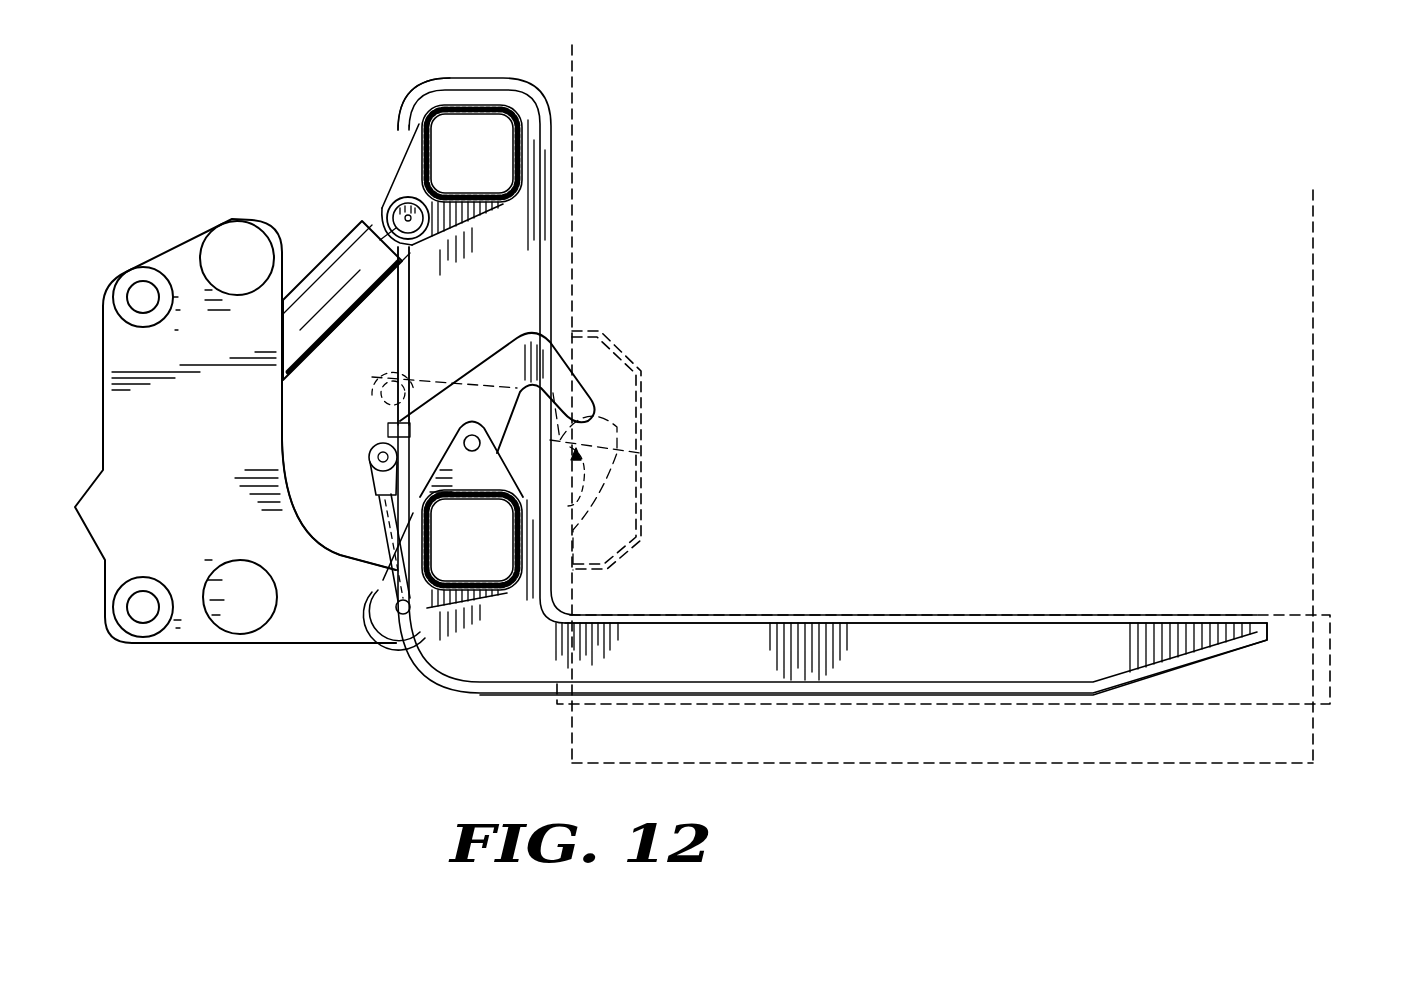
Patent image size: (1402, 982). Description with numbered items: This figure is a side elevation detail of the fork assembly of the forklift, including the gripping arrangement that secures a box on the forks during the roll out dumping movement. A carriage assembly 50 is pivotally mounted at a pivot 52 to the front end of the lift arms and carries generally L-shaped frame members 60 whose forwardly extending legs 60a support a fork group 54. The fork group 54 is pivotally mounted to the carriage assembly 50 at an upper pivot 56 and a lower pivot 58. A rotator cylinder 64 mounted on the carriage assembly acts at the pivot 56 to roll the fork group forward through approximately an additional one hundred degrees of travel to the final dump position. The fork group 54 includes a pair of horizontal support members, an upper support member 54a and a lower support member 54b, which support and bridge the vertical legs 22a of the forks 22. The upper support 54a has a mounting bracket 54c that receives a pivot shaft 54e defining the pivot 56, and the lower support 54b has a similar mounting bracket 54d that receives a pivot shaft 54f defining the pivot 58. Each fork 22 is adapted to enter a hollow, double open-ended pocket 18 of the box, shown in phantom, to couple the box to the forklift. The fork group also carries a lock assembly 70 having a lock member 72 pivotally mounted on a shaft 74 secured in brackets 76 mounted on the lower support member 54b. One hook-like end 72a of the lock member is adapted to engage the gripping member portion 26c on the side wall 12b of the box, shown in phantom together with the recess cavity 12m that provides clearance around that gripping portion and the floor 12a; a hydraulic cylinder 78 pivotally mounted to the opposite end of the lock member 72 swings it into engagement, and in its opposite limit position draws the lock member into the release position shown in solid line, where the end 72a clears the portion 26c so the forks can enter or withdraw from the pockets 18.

The floor 12a is at (940, 768).
The side wall 12b is at (574, 192).
The recess cavity 12m is at (618, 333).
The pocket 18 is at (1333, 665).
The fork 22 is at (793, 622).
The vertical leg 22a is at (402, 122).
The gripping member portion 26c is at (578, 508).
The carriage assembly 50 is at (214, 672).
The pivot 52 is at (142, 606).
The fork group 54 is at (437, 705).
The upper support member 54a is at (496, 108).
The lower support member 54b is at (500, 604).
The mounting bracket 54c is at (403, 172).
The mounting bracket 54d is at (436, 608).
The pivot shaft 54e is at (386, 210).
The pivot shaft 54f is at (400, 642).
The pivot 56 is at (424, 241).
The pivot 58 is at (395, 568).
The frame member 60 is at (202, 432).
The forwardly extending leg 60a is at (310, 645).
The rotator cylinder 64 is at (308, 362).
The lock assembly 70 is at (430, 362).
The lock member 72 is at (506, 350).
The hook-like end 72a is at (640, 452).
The shaft 74 is at (474, 434).
The bracket 76 is at (480, 478).
The hydraulic cylinder 78 is at (370, 470).